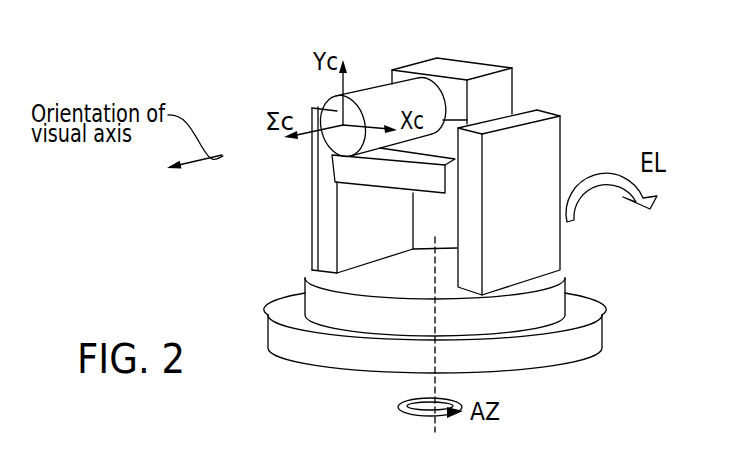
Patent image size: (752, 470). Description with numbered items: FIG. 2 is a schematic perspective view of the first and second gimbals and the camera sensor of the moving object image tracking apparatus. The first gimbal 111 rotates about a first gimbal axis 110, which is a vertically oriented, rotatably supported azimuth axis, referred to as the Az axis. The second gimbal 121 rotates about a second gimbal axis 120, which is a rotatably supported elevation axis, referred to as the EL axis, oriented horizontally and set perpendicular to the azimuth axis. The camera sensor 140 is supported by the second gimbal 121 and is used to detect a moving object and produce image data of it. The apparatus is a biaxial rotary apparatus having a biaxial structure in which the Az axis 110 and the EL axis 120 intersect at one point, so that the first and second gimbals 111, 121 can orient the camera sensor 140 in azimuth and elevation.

The first gimbal axis 110 is at (430, 373).
The first gimbal 111 is at (603, 338).
The second gimbal axis 120 is at (522, 170).
The second gimbal 121 is at (348, 165).
The camera sensor 140 is at (357, 117).